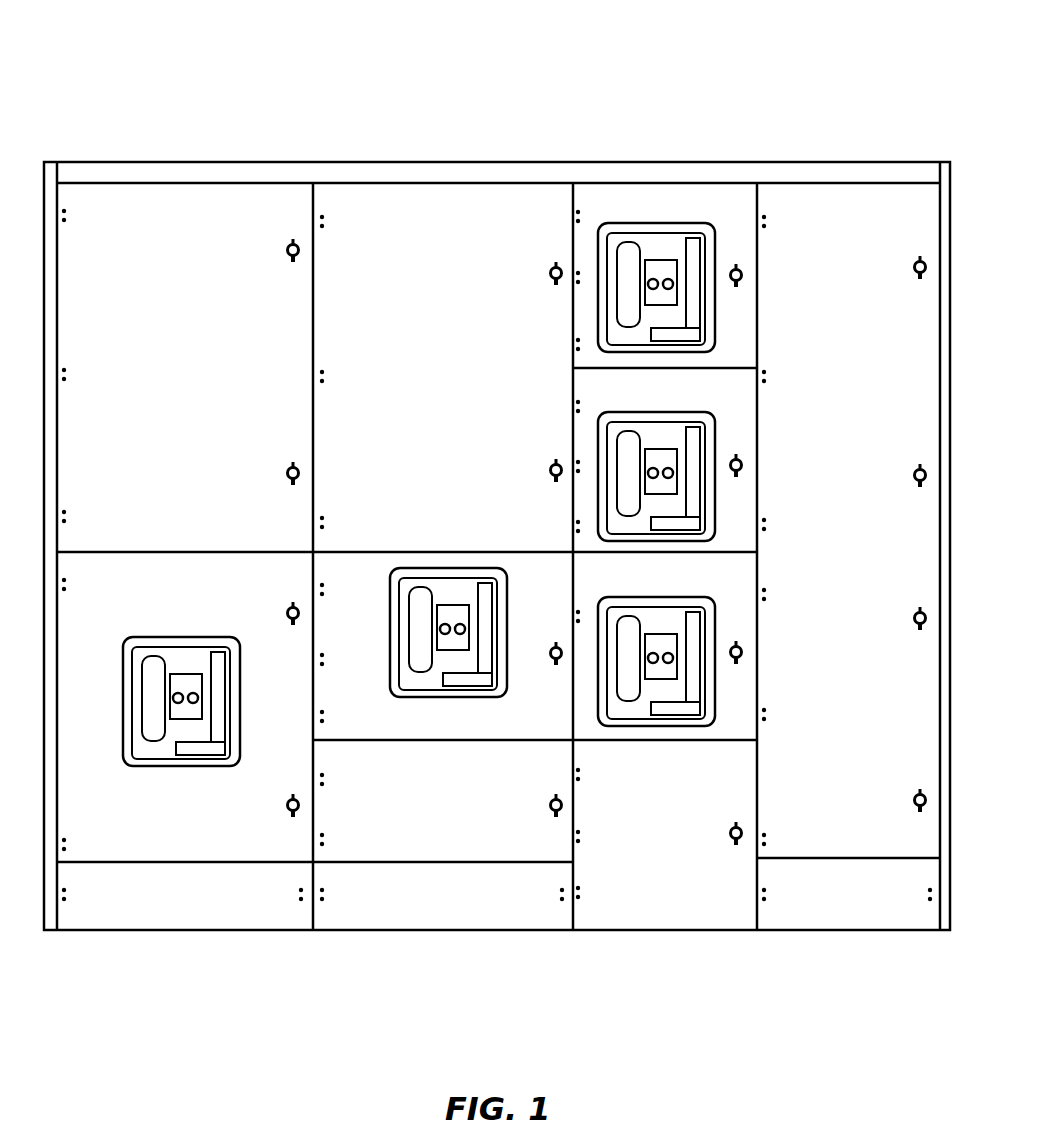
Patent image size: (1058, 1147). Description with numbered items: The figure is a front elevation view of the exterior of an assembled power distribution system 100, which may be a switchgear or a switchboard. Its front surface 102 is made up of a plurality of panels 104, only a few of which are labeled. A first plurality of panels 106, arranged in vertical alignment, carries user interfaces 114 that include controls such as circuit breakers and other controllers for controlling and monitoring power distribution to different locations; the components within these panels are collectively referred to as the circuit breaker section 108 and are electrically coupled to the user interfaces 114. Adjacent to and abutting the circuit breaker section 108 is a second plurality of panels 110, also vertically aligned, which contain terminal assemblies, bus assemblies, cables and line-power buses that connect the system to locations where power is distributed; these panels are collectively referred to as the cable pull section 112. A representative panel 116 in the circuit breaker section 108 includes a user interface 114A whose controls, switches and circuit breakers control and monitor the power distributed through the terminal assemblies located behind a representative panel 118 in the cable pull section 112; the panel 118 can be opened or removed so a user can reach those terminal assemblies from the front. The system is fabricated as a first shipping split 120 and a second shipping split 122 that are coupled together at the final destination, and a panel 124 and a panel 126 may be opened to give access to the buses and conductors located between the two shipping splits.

The power distribution system 100 is at (776, 72).
The front surface 102 is at (163, 233).
The panels 104 is at (733, 193).
The first plurality of panels 106 is at (636, 168).
The circuit breaker section 108 is at (610, 170).
The second plurality of panels 110 is at (848, 168).
The cable pull section 112 is at (815, 168).
The user interfaces 114 is at (656, 210).
The user interface 114A is at (716, 513).
The panel 116 is at (738, 407).
The panel 118 is at (873, 195).
The first shipping split 120 is at (316, 946).
The second shipping split 122 is at (935, 947).
The panel 124 is at (214, 386).
The panel 126 is at (478, 383).